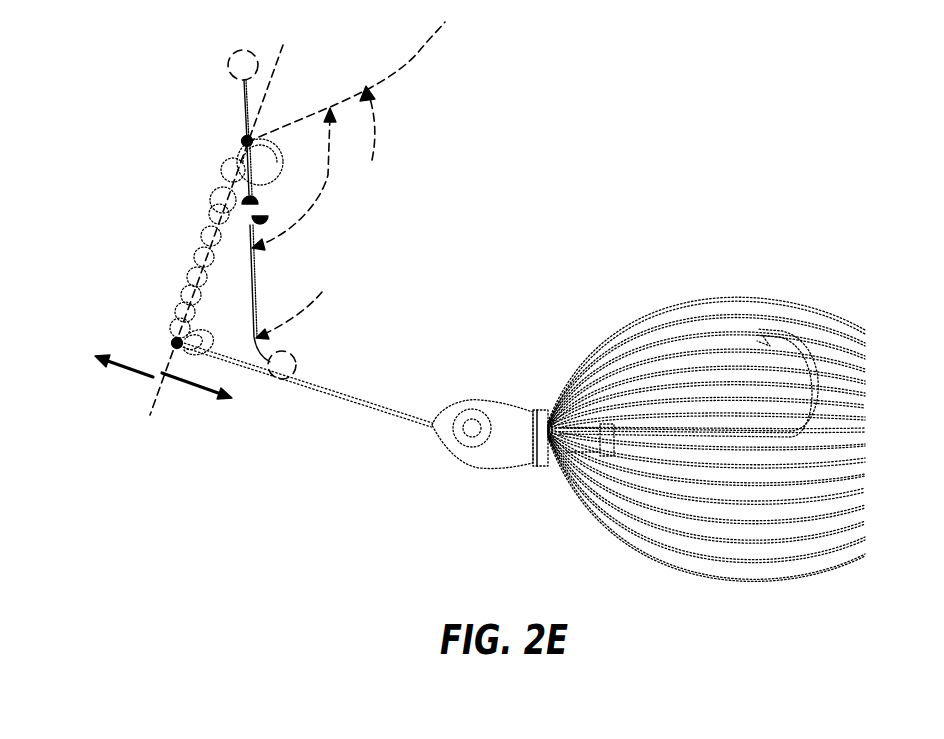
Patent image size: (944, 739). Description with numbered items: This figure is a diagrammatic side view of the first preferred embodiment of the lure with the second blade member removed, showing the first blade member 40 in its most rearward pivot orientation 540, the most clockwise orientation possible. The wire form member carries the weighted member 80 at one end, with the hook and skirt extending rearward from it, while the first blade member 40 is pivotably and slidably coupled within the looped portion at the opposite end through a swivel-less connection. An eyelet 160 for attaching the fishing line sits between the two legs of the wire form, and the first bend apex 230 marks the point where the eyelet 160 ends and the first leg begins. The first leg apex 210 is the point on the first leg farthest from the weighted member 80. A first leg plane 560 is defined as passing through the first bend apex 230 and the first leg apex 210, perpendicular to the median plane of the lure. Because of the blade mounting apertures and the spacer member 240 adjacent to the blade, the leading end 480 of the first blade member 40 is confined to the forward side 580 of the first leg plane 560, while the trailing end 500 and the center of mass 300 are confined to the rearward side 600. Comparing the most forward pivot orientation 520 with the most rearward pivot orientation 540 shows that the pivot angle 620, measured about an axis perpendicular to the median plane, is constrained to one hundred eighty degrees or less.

The first blade member 40 is at (250, 277).
The weighted member 80 is at (490, 445).
The eyelet 160 is at (140, 333).
The first leg apex 210 is at (243, 141).
The first bend apex 230 is at (168, 333).
The spacer member 240 is at (230, 162).
The center of mass 300 is at (248, 223).
The leading end 480 is at (227, 66).
The trailing end 500 is at (295, 367).
The most forward pivot orientation 520 is at (380, 130).
The most rearward pivot orientation 540 is at (305, 315).
The first leg plane 560 is at (272, 72).
The forward side 580 is at (133, 371).
The rearward side 600 is at (190, 385).
The pivot angle 620 is at (309, 209).